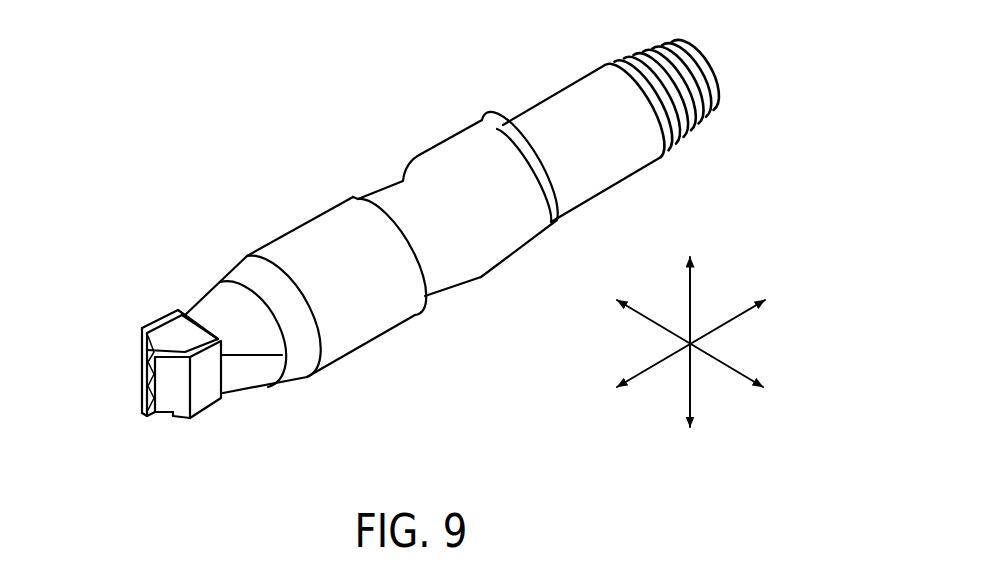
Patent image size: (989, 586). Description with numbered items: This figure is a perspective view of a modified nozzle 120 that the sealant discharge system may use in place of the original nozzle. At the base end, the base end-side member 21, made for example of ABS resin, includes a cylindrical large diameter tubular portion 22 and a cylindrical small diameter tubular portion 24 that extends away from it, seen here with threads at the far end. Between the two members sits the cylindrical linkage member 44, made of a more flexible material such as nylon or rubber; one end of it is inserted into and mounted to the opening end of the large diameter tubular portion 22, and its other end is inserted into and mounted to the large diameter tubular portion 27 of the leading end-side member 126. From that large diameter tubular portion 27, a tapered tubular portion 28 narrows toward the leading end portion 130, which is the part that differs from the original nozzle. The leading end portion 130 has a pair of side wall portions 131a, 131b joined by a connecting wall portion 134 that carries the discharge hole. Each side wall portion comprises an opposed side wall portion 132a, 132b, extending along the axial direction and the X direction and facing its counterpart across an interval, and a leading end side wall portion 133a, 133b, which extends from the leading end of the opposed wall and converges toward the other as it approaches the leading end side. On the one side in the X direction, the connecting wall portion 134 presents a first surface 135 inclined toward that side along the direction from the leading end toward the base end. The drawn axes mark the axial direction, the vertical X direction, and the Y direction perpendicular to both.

The nozzle 120 is at (331, 62).
The leading end-side member 126 is at (245, 225).
The large diameter tubular portion 27 is at (320, 230).
The tapered tubular portion 28 is at (295, 372).
The leading end portion 130 is at (130, 366).
The side wall portion 131a is at (190, 426).
The side wall portion 131b is at (137, 324).
The opposed side wall portion 132a is at (210, 393).
The opposed side wall portion 132b is at (153, 320).
The leading end side wall portion 133a is at (168, 402).
The leading end side wall portion 133b is at (145, 340).
The connecting wall portion 134 is at (140, 403).
The first surface 135 is at (182, 329).
The linkage member 44 is at (395, 198).
The base end-side member 21 is at (513, 96).
The large diameter tubular portion 22 is at (456, 146).
The small diameter tubular portion 24 is at (561, 103).